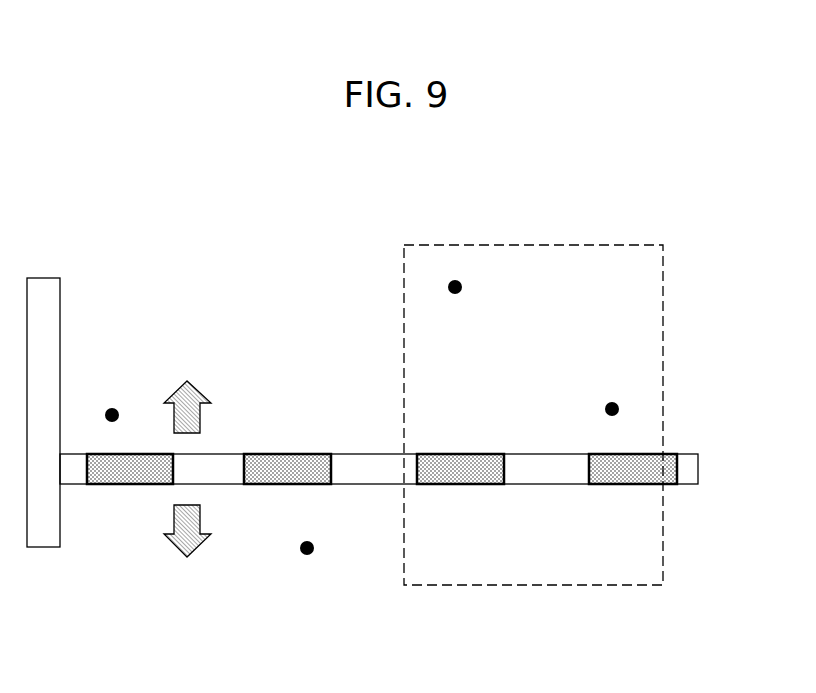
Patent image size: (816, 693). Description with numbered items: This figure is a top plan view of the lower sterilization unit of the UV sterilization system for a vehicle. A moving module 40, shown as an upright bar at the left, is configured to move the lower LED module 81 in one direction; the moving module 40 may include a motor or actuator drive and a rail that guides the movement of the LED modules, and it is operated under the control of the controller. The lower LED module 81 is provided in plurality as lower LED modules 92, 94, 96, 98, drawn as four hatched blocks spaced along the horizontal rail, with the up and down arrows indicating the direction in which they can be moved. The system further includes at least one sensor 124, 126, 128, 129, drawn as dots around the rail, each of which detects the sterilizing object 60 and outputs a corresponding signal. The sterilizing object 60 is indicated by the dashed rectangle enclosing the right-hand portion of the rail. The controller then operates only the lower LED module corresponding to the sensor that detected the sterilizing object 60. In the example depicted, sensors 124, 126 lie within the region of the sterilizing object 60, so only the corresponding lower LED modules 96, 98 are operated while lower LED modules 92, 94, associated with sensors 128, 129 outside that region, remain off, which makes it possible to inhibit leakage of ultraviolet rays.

The moving module 40 is at (43, 549).
The sterilizing object 60 is at (663, 272).
The lower LED module 81 is at (559, 548).
The lower LED module 92 is at (110, 473).
The lower LED module 94 is at (270, 484).
The lower LED module 96 is at (462, 485).
The lower LED module 98 is at (633, 485).
The sensor 124 is at (462, 287).
The sensor 126 is at (605, 405).
The sensor 128 is at (310, 556).
The sensor 129 is at (112, 408).